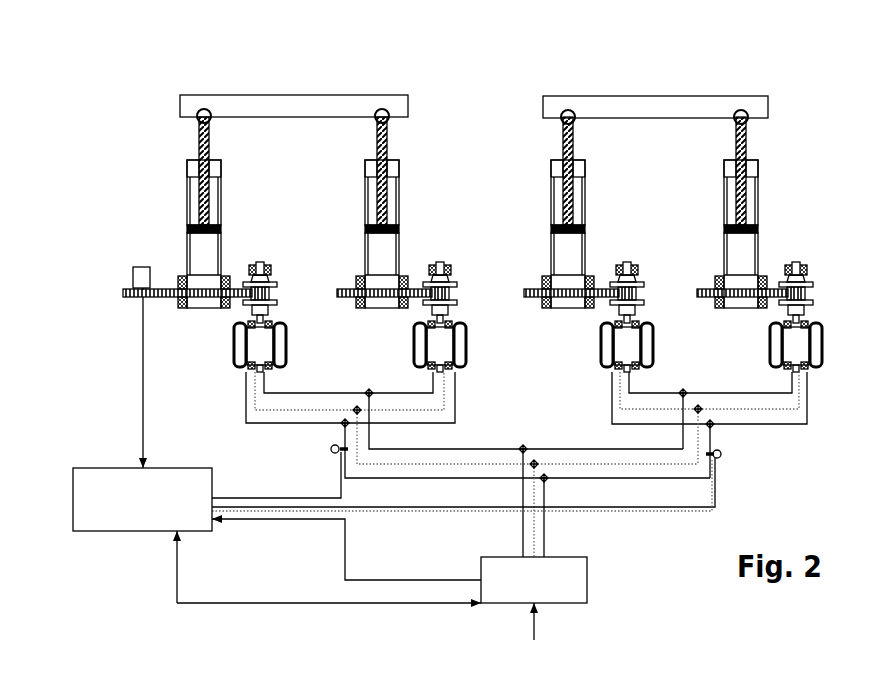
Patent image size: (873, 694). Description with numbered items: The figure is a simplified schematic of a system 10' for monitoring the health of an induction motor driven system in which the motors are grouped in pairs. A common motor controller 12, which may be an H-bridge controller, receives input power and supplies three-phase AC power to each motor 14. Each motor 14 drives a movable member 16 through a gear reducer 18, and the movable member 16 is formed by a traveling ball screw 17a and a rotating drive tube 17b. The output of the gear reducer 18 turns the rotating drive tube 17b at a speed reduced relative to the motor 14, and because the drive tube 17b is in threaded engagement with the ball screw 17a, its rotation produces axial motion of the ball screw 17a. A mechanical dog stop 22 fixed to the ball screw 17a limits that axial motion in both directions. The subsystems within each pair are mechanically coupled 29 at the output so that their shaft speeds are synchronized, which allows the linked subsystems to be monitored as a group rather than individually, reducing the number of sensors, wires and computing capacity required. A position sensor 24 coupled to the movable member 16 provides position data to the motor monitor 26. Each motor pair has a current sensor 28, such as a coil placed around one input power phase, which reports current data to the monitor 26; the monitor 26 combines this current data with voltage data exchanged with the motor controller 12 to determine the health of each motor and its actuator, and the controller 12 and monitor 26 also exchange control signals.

The system 10' is at (420, 339).
The motor controller 12 is at (588, 568).
The motor 14 is at (238, 358).
The movable member 16 is at (93, 187).
The traveling ball screw 17a is at (190, 177).
The rotating drive tube 17b is at (186, 246).
The gear reducer 18 is at (248, 301).
The mechanical dog stop 22 is at (186, 227).
The position sensor 24 is at (133, 278).
The motor monitor 26 is at (73, 509).
The current sensor 28 is at (328, 450).
The mechanical coupling 29 is at (203, 93).